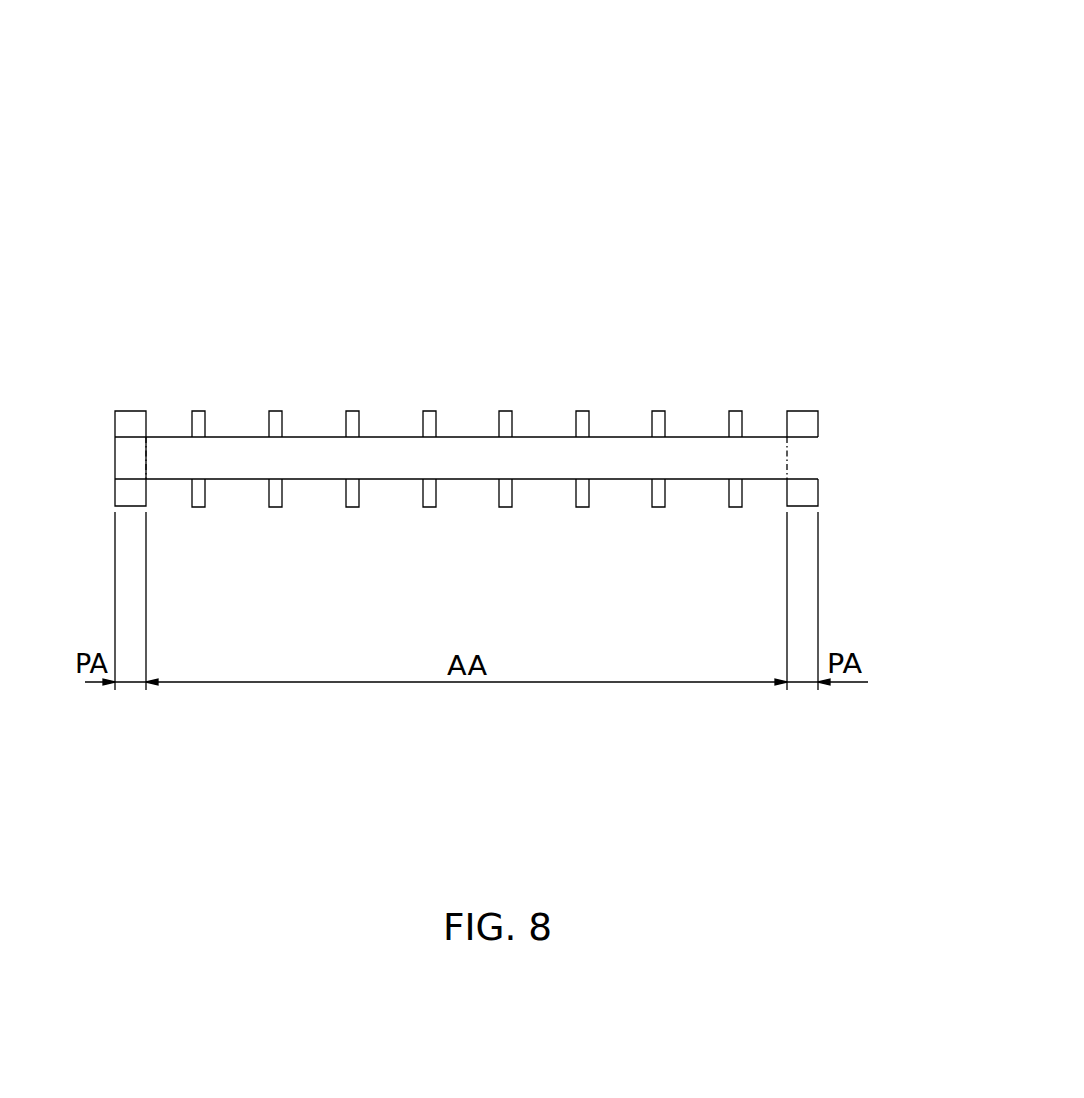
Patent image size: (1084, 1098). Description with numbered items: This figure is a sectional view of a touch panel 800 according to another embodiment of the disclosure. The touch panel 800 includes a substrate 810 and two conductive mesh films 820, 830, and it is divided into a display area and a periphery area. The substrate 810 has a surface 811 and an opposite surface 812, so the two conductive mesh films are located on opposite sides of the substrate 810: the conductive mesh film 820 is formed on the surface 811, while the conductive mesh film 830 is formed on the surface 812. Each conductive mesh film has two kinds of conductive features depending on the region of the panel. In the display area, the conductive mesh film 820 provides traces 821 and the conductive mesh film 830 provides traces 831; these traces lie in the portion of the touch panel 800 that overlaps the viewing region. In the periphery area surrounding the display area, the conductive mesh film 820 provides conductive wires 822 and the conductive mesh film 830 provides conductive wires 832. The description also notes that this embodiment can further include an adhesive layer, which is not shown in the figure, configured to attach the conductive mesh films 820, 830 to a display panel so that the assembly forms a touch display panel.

The touch panel 800 is at (680, 50).
The substrate 810 is at (160, 456).
The surface 811 is at (233, 435).
The surface 812 is at (233, 491).
The conductive mesh film 820 is at (844, 412).
The traces 821 is at (738, 418).
The conductive wires 822 is at (803, 422).
The conductive mesh film 830 is at (844, 506).
The traces 831 is at (737, 499).
The conductive wires 832 is at (805, 490).